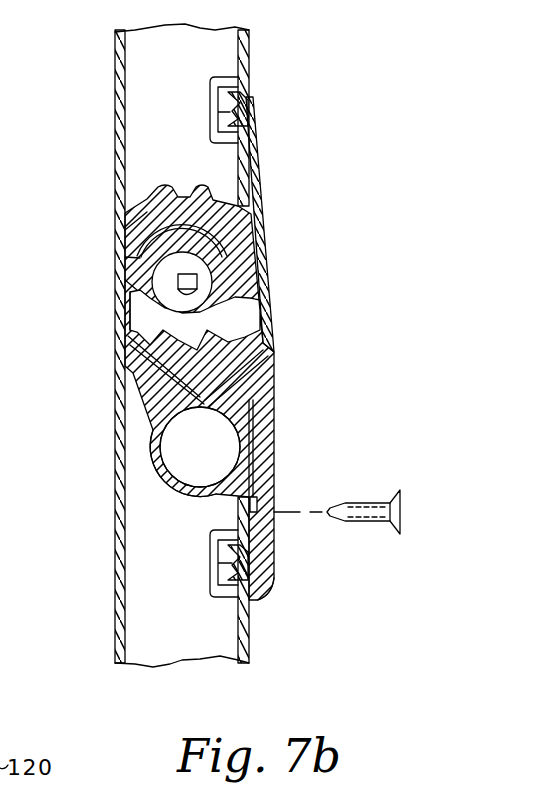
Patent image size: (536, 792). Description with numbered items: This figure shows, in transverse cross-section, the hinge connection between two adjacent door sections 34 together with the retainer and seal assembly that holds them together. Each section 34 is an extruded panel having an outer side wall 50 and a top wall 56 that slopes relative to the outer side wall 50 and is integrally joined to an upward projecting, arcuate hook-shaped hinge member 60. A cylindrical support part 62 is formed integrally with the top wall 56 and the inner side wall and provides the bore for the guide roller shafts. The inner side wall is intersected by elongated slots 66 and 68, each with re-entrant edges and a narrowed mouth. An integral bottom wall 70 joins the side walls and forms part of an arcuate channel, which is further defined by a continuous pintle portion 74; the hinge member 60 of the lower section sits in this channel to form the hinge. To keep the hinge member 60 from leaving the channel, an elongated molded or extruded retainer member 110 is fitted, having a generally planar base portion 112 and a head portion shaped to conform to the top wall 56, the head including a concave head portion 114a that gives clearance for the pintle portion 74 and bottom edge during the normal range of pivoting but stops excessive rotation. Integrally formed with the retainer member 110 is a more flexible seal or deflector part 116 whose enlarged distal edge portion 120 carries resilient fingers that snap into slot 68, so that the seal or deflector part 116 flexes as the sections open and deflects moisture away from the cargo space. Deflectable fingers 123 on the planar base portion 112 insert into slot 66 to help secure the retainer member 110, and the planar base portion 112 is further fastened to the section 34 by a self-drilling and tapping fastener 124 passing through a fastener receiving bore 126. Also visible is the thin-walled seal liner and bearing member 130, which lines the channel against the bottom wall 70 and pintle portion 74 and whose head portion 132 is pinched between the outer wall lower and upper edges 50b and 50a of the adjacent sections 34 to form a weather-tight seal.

The intermediate section 34 is at (103, 127).
The outer side wall 50 is at (116, 62).
The outer wall upper edge 50a is at (125, 270).
The outer wall lower edge 50b is at (125, 250).
The top wall 56 is at (125, 357).
The hook-shaped hinge member 60 is at (214, 299).
The cylindrical support part 62 is at (180, 498).
The elongated slot 66 is at (262, 590).
The elongated slot 68 is at (249, 109).
The bottom wall 70 is at (249, 231).
The pintle portion 74 is at (128, 312).
The retainer member 110 is at (290, 557).
The planar base portion 112 is at (275, 420).
The concave head portion 114a is at (274, 353).
The seal or deflector part 116 is at (263, 190).
The distal edge portion 120 is at (253, 97).
The deflectable fingers 123 is at (212, 540).
The self-drilling and tapping fastener 124 is at (367, 525).
The fastener receiving bore 126 is at (258, 505).
The seal liner and bearing member 130 is at (118, 224).
The head portion 132 is at (125, 266).